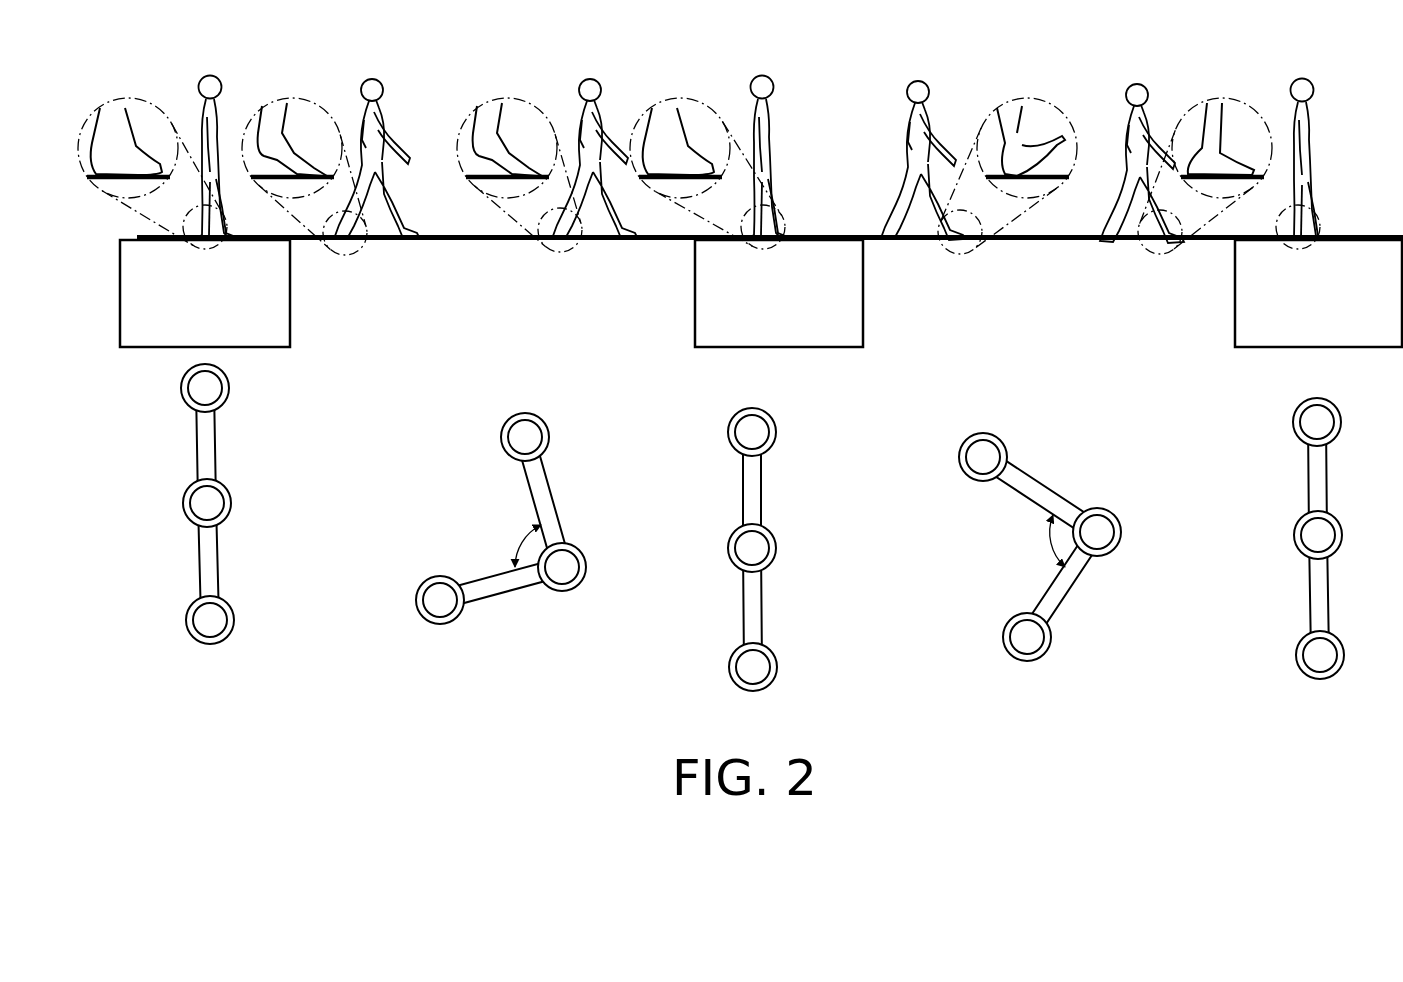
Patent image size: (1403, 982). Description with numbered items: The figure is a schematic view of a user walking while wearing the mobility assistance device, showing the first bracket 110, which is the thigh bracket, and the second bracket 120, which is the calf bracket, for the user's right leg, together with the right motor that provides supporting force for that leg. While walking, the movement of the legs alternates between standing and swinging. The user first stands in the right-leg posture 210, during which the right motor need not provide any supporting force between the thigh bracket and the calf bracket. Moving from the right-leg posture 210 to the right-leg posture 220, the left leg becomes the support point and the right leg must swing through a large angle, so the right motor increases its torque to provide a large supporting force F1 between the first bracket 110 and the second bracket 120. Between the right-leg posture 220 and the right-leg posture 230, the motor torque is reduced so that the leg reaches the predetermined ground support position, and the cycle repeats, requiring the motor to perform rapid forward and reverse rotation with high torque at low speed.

The right-leg posture 210 is at (205, 293).
The right-leg posture 220 is at (779, 293).
The right-leg posture 230 is at (1318, 293).
The first bracket 110 is at (208, 448).
The second bracket 120 is at (210, 562).
The supporting force F1 is at (777, 541).